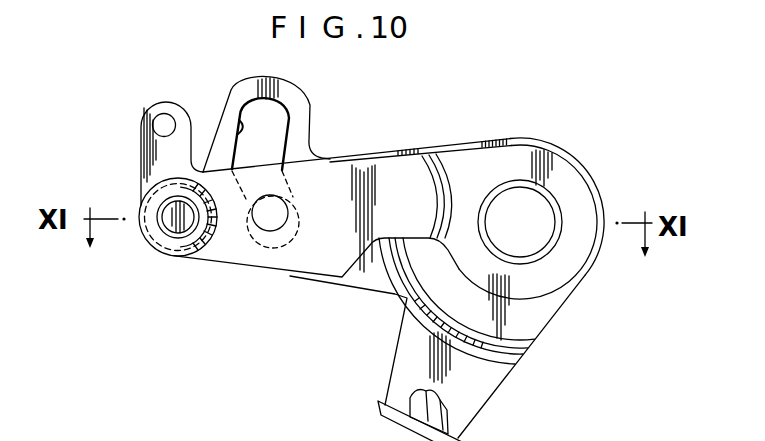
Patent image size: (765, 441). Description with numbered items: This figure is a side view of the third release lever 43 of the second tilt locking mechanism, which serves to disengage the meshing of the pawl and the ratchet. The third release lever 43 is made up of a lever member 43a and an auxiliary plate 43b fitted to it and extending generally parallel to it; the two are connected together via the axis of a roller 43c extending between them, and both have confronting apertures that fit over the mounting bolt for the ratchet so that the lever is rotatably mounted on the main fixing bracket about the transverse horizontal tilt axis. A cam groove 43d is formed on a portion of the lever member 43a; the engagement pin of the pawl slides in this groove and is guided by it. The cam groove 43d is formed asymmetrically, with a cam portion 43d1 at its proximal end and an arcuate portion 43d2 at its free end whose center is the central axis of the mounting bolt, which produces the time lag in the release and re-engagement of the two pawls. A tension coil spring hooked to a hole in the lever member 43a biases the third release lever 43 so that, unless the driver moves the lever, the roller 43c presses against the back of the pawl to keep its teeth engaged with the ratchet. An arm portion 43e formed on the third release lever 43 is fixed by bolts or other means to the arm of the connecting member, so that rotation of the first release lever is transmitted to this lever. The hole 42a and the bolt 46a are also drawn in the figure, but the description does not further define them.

The third release lever 43 is at (391, 152).
The lever member 43a is at (541, 318).
The auxiliary plate 43b is at (316, 263).
The roller 43c is at (163, 243).
The cam groove 43d is at (278, 118).
The cam portion 43d1 is at (290, 188).
The arcuate portion 43d2 is at (244, 130).
The arm portion 43e is at (381, 402).
The hole 42a is at (270, 230).
The bolt 46a is at (449, 417).